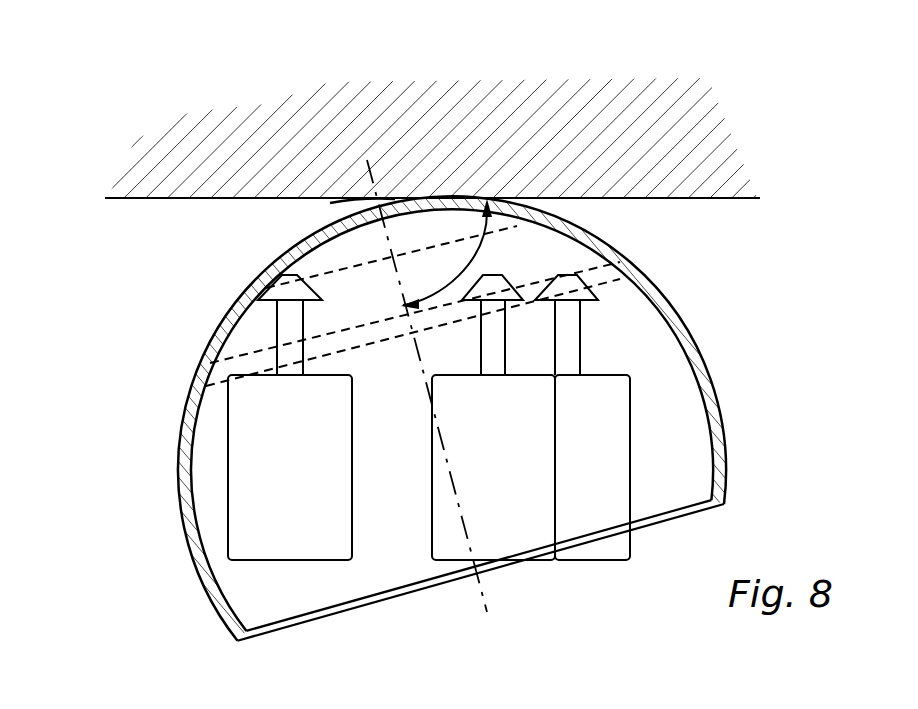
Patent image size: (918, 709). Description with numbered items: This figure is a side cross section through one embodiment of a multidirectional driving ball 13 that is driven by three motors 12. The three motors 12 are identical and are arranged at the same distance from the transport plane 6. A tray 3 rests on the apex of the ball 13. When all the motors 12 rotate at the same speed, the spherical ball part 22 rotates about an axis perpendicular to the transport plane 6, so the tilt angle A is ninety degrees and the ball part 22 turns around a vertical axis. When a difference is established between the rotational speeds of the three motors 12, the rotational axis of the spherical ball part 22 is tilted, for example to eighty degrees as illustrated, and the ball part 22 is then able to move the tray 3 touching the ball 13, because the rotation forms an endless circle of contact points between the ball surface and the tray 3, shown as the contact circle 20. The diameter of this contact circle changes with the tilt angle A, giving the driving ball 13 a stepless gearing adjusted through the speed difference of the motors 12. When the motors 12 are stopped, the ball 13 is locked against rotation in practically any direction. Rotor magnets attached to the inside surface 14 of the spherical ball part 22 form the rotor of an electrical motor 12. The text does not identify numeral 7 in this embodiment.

The tray 3 is at (472, 175).
The transport plane 6 is at (712, 199).
The robot body 7 is at (459, 354).
The multidirectional driving ball 13 is at (459, 354).
The motor 12 is at (598, 518).
The inside surface 14 is at (228, 607).
The contact circle 20 is at (360, 215).
The spherical ball part 22 is at (177, 507).
The tilt angle A is at (448, 254).